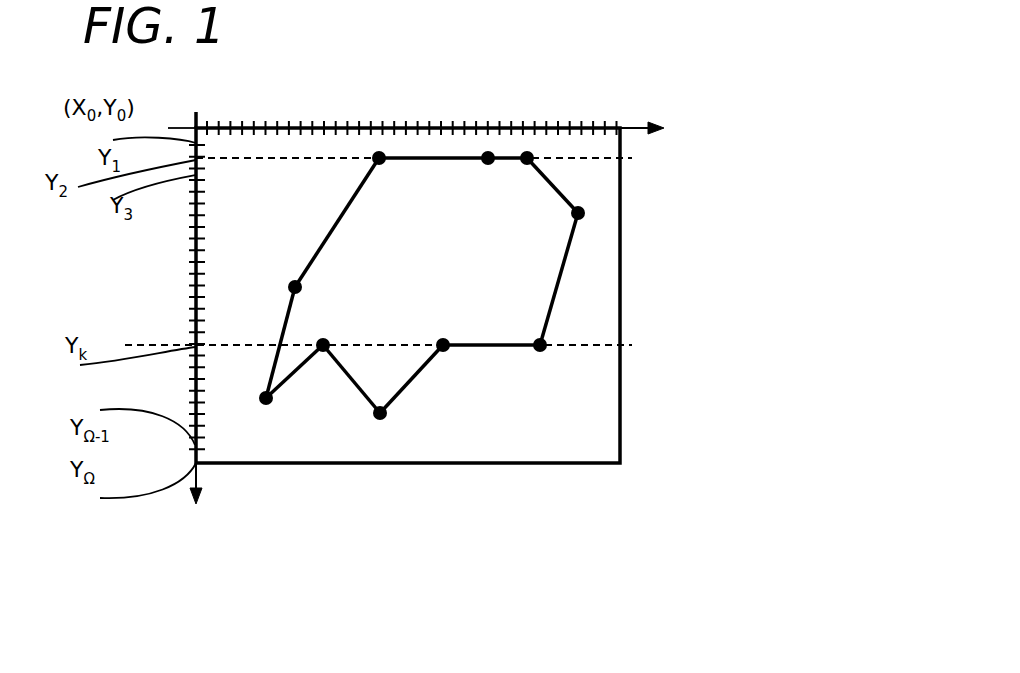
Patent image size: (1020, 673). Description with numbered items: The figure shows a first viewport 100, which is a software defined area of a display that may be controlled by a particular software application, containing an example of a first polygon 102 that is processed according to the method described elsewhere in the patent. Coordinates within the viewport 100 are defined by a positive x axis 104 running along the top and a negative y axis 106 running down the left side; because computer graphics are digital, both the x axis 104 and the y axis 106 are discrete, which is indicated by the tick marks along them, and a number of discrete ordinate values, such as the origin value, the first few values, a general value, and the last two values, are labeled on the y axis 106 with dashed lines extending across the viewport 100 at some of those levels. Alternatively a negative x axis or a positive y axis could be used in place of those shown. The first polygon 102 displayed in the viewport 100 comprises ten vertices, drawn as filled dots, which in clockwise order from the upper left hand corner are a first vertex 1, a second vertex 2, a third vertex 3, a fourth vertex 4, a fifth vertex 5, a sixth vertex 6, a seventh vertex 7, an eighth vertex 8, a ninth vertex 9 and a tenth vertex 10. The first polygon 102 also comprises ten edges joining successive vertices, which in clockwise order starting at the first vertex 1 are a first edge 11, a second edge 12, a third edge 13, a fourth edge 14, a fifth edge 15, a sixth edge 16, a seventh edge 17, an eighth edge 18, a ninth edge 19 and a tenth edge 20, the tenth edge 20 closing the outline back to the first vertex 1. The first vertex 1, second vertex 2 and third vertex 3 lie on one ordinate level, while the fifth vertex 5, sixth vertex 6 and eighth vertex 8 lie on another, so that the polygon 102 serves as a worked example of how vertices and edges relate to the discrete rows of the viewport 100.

The first vertex 1 is at (373, 152).
The second vertex 2 is at (485, 155).
The third vertex 3 is at (527, 157).
The fourth vertex 4 is at (578, 214).
The fifth vertex 5 is at (540, 347).
The sixth vertex 6 is at (443, 347).
The seventh vertex 7 is at (380, 415).
The eighth vertex 8 is at (323, 347).
The ninth vertex 9 is at (266, 400).
The tenth vertex 10 is at (290, 283).
The first edge 11 is at (428, 158).
The second edge 12 is at (505, 157).
The third edge 13 is at (557, 182).
The fourth edge 14 is at (557, 288).
The fifth edge 15 is at (468, 345).
The sixth edge 16 is at (400, 393).
The seventh edge 17 is at (350, 380).
The eighth edge 18 is at (293, 378).
The ninth edge 19 is at (283, 328).
The tenth edge 20 is at (344, 210).
The first viewport 100 is at (620, 463).
The first polygon 102 is at (451, 268).
The positive x axis 104 is at (620, 127).
The negative y axis 106 is at (196, 480).